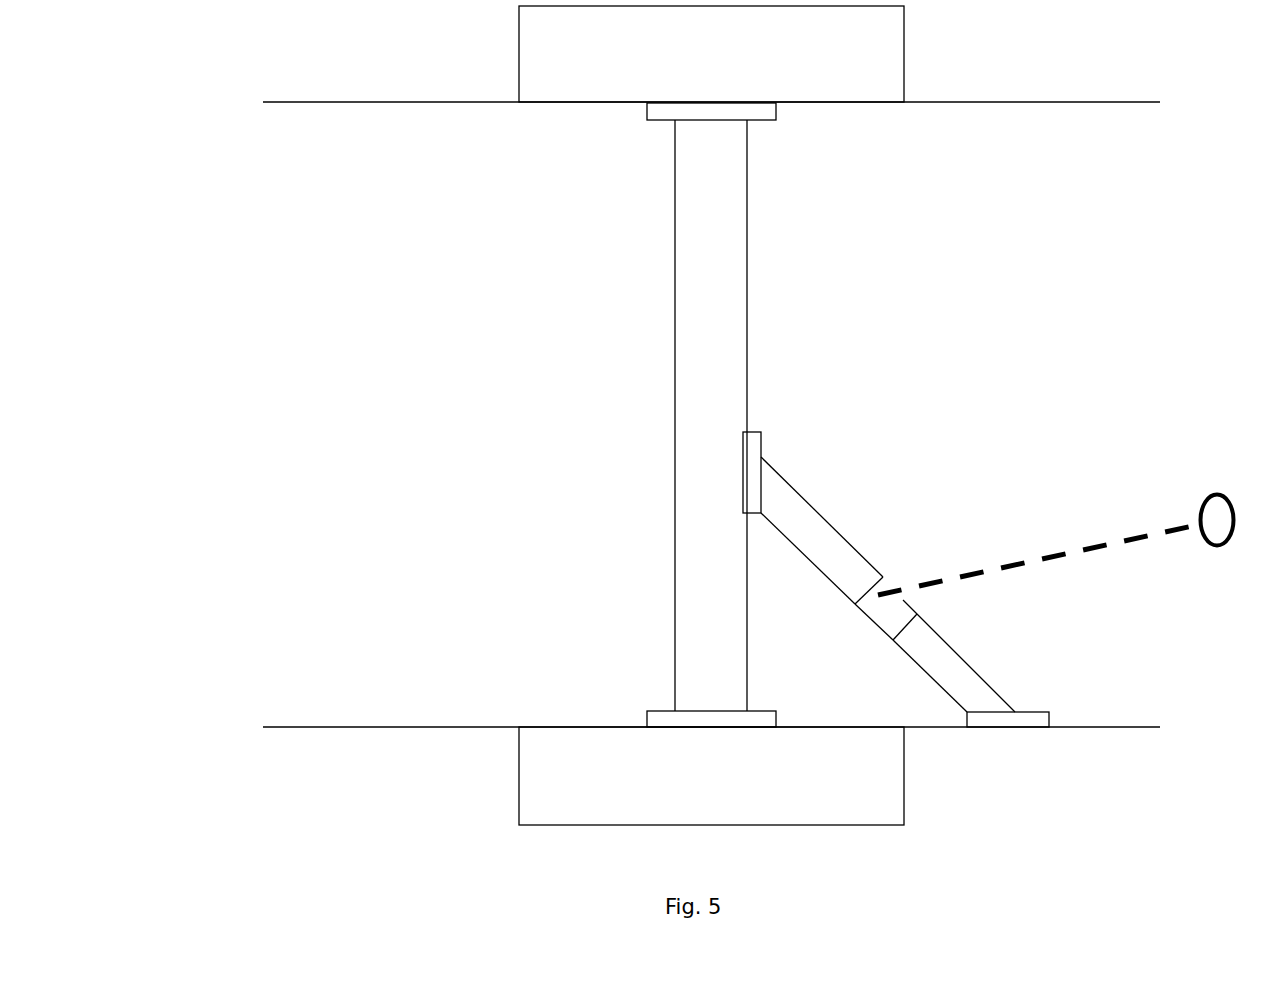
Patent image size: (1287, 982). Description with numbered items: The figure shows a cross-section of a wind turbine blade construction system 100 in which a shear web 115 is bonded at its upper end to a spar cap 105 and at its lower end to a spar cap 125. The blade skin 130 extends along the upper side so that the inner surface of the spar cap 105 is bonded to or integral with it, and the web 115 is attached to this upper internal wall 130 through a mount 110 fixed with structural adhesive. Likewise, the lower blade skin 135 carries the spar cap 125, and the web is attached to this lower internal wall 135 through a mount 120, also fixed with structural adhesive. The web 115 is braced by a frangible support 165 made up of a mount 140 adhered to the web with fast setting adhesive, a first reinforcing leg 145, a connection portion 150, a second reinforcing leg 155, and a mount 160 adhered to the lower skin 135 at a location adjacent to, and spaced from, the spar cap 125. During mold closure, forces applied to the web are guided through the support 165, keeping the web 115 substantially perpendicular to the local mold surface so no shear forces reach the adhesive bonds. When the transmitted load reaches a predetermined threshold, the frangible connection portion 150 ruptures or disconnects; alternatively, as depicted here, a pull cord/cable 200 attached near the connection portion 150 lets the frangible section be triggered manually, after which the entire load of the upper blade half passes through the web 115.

The system 100 is at (256, 262).
The spar cap 105 is at (711, 54).
The mount 110 is at (660, 108).
The shear web 115 is at (711, 415).
The mount 120 is at (665, 718).
The spar cap 125 is at (711, 776).
The blade skin 130 is at (366, 101).
The blade skin 135 is at (455, 728).
The mount 140 is at (753, 442).
The first reinforcing leg 145 is at (805, 510).
The connection portion 150 is at (887, 608).
The second reinforcing leg 155 is at (945, 657).
The mount 160 is at (1038, 710).
The support 165 is at (897, 482).
The pull cord/cable 200 is at (1081, 545).